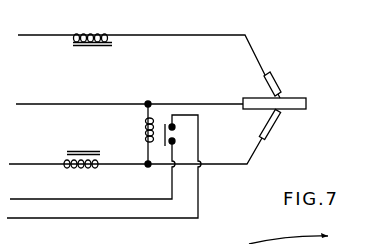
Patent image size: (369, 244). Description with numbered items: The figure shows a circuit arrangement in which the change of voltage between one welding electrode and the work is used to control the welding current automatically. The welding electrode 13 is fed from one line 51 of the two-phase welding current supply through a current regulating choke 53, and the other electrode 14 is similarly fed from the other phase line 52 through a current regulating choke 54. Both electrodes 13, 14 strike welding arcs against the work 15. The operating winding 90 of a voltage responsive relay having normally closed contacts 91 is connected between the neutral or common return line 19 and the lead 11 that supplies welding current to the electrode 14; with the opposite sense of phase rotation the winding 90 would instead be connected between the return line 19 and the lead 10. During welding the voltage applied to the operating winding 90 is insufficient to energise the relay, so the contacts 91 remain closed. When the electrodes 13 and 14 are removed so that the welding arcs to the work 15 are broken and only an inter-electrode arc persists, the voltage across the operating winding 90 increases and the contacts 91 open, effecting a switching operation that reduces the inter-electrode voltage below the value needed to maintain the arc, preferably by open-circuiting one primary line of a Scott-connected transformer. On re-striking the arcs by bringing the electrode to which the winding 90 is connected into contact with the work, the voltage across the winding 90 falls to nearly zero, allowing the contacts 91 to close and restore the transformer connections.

The lead 10 is at (216, 35).
The lead 11 is at (221, 164).
The welding electrode 13 is at (277, 84).
The welding electrode 14 is at (270, 128).
The work 15 is at (290, 109).
The neutral or common return line 19 is at (22, 104).
The line 51 is at (31, 35).
The phase line 52 is at (19, 164).
The current regulating choke 53 is at (90, 32).
The current regulating choke 54 is at (90, 167).
The operating winding 90 is at (145, 134).
The contacts 91 is at (165, 136).